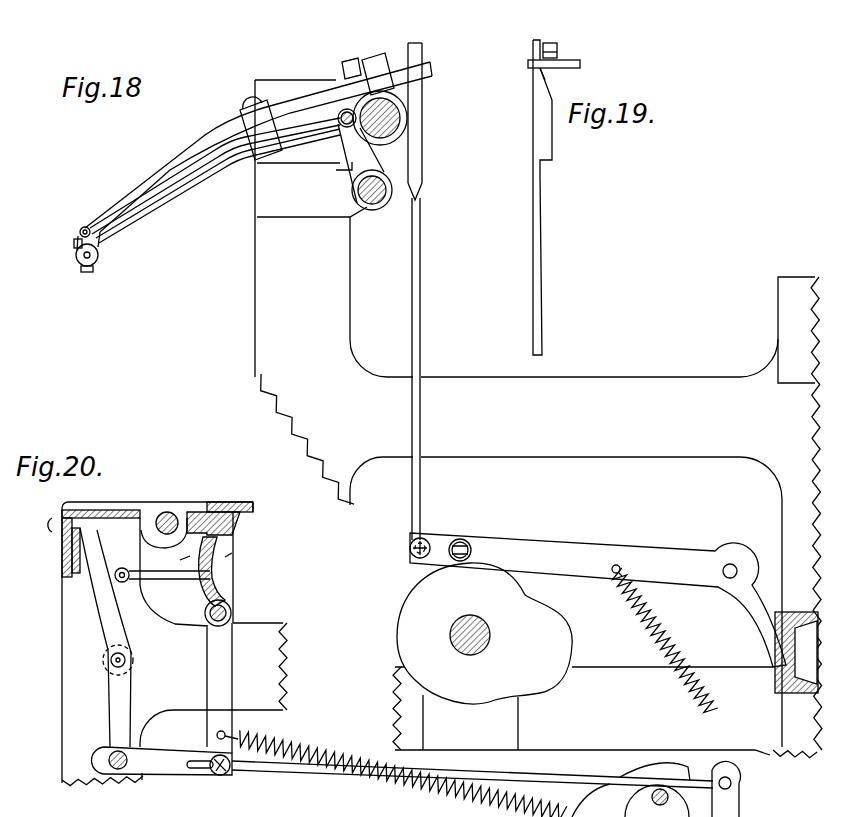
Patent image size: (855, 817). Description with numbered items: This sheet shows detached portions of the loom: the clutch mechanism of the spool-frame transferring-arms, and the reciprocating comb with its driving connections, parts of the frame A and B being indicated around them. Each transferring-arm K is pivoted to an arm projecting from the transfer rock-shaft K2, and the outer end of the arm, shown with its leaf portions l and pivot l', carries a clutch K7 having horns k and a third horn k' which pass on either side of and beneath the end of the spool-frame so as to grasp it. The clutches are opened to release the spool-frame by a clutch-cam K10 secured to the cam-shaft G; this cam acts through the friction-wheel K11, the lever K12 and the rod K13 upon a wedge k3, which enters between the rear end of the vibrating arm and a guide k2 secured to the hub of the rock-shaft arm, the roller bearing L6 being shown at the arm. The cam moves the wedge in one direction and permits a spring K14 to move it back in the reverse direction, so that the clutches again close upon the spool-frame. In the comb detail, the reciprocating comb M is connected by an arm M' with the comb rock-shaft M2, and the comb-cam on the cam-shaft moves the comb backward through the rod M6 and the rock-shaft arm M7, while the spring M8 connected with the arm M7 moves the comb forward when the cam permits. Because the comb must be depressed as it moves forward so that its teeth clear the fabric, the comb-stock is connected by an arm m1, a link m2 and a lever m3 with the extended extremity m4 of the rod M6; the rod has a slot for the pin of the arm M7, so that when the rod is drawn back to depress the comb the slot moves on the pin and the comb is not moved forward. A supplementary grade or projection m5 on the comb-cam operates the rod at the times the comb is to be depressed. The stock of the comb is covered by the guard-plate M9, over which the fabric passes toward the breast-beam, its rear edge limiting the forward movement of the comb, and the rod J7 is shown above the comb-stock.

In FIG. 18, the frame A is at (546, 417).
In FIG. 18, the transferring-arm K is at (160, 143).
In FIG. 19, the transferring-arm K is at (549, 39).
In FIG. 18, the leaf springs l is at (215, 180).
In FIG. 18, the clutch K7 is at (85, 224).
In FIG. 18, the pin l' is at (62, 217).
In FIG. 18, the horn k is at (57, 242).
In FIG. 18, the third horn k' is at (87, 272).
In FIG. 18, the rock-shaft K2 is at (387, 141).
In FIG. 18, the link roller L6 is at (364, 159).
In FIG. 18, the guide k2 is at (428, 63).
In FIG. 19, the guide k2 is at (585, 64).
In FIG. 18, the wedge k3 is at (425, 80).
In FIG. 19, the wedge k3 is at (552, 81).
In FIG. 18, the rod K13 is at (425, 262).
In FIG. 19, the rod K13 is at (538, 274).
In FIG. 18, the lever K12 is at (598, 592).
In FIG. 18, the friction-wheel K11 is at (475, 551).
In FIG. 18, the clutch-cam K10 is at (484, 633).
In FIG. 18, the cam-shaft G is at (470, 614).
In FIG. 20, the cam-shaft G is at (630, 800).
In FIG. 18, the spring K14 is at (665, 639).
In FIG. 20, the frame block B is at (53, 523).
In FIG. 20, the rod J7 is at (167, 510).
In FIG. 20, the guard-plate M9 is at (213, 510).
In FIG. 20, the reciprocating comb M is at (245, 561).
In FIG. 20, the arm M' is at (236, 571).
In FIG. 20, the extended extremity m4 is at (228, 556).
In FIG. 20, the comb rock-shaft M2 is at (240, 612).
In FIG. 20, the arm m1 is at (185, 548).
In FIG. 20, the link m2 is at (162, 568).
In FIG. 20, the lever m3 is at (117, 637).
In FIG. 20, the arm M7 is at (208, 688).
In FIG. 20, the rod M6 is at (472, 771).
In FIG. 20, the spring M8 is at (392, 773).
In FIG. 20, the projection m5 is at (680, 784).